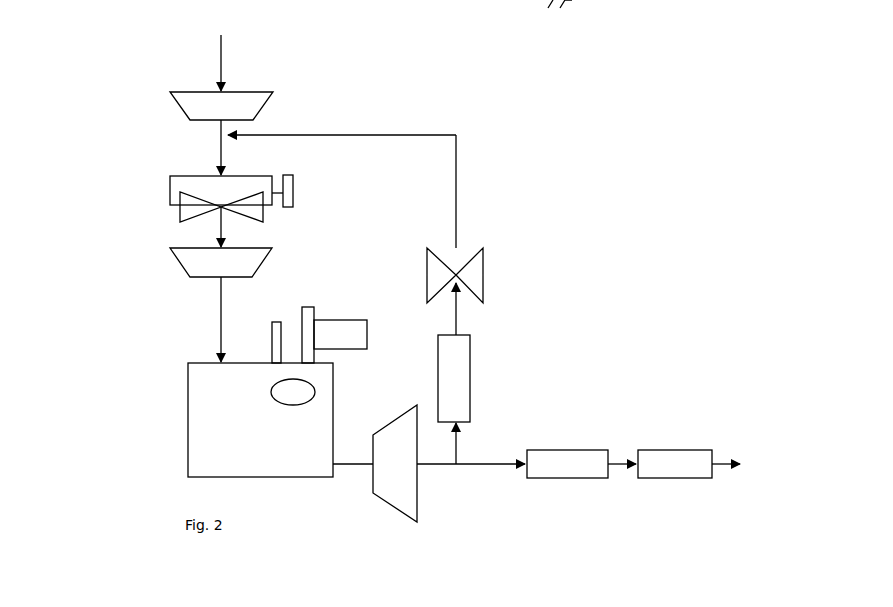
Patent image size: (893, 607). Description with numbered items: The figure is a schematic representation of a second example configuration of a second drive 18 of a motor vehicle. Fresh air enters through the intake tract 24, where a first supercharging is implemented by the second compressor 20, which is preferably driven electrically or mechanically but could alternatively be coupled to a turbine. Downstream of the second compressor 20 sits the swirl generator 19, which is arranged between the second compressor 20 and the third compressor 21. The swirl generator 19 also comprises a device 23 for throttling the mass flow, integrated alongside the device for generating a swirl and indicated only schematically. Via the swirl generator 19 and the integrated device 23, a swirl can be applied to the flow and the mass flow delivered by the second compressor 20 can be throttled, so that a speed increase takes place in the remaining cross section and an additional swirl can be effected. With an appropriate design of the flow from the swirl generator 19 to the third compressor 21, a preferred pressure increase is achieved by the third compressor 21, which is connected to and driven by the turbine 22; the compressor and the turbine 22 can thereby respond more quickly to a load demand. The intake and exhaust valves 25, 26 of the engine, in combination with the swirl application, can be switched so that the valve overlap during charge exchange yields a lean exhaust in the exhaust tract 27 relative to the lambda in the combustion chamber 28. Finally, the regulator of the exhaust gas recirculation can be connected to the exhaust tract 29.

The second drive 18 is at (110, 98).
The swirl generator 19 is at (168, 192).
The second compressor 20 is at (253, 92).
The third compressor 21 is at (176, 264).
The turbine 22 is at (390, 508).
The device for throttling the mass flow 23 is at (263, 215).
The intake tract 24 is at (219, 60).
The intake valve 25 is at (275, 320).
The exhaust valve 26 is at (302, 307).
The exhaust tract 27 is at (353, 465).
The combustion chamber 28 is at (315, 388).
The exhaust tract 29 is at (437, 463).